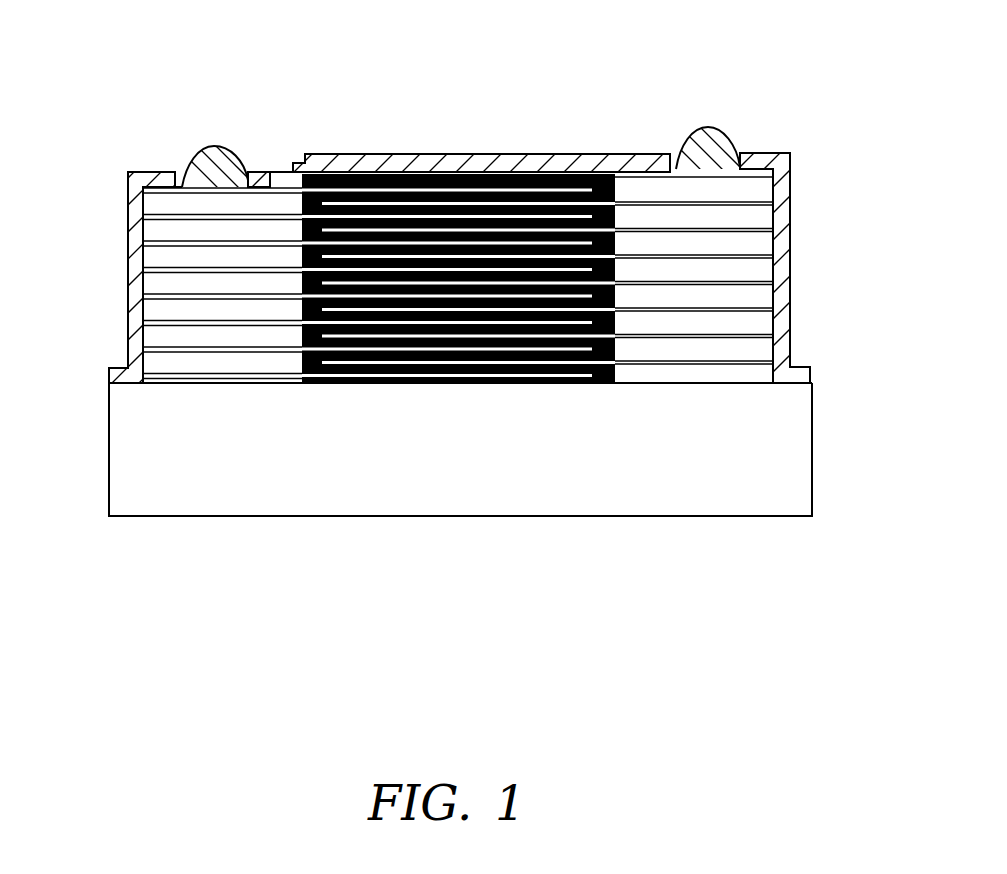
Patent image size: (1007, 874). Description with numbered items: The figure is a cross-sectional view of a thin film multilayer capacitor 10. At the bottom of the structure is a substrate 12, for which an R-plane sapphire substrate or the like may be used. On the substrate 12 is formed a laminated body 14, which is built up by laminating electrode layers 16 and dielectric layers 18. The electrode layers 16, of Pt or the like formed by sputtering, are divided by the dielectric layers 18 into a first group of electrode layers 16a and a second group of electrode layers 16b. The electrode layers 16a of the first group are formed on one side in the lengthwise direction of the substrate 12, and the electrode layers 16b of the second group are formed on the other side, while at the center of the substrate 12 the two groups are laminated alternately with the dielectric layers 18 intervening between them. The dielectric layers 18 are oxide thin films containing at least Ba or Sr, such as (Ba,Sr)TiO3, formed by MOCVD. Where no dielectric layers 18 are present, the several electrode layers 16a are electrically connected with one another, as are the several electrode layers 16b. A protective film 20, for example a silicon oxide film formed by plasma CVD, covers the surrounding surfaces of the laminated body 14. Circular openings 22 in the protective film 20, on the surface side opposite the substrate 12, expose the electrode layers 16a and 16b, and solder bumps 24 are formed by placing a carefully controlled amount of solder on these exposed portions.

The thin film multilayer capacitor 10 is at (85, 31).
The substrate 12 is at (748, 488).
The laminated body 14 is at (185, 392).
The electrode layers 16 is at (537, 618).
The electrode layers of the first group 16a is at (187, 208).
The electrode layers of the second group 16b is at (735, 218).
The dielectric layers 18 is at (300, 202).
The protective film 20 is at (128, 258).
The openings 22 is at (181, 162).
The solder bumps 24 is at (217, 150).